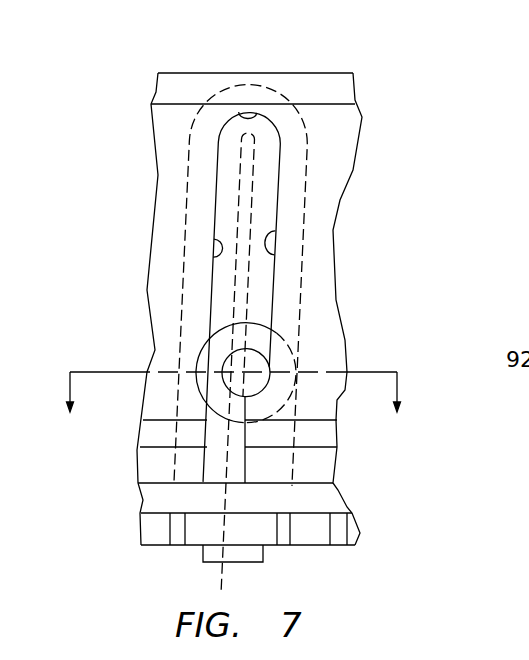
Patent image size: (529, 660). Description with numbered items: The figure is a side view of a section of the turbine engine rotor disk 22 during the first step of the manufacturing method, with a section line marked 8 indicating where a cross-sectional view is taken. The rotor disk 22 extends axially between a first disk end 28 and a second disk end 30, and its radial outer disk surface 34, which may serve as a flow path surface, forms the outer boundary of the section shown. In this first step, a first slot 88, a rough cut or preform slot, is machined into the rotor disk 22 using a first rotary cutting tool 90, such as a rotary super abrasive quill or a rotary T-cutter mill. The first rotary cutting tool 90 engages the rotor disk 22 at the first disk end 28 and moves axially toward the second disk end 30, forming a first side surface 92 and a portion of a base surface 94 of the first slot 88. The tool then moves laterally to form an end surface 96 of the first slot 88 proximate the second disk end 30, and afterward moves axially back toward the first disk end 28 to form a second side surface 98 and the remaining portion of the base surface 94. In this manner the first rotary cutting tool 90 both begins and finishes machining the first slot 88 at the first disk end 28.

The turbine engine rotor disk 22 is at (373, 107).
The first disk end 28 is at (128, 522).
The second disk end 30 is at (153, 63).
The radial outer disk surface 34 is at (343, 146).
The first slot 88 is at (222, 200).
The first rotary cutting tool 90 is at (225, 385).
The first side surface 92 is at (212, 242).
The base surface 94 is at (225, 175).
The end surface 96 is at (236, 110).
The second side surface 98 is at (272, 229).
The section line 8- 8 is at (235, 408).